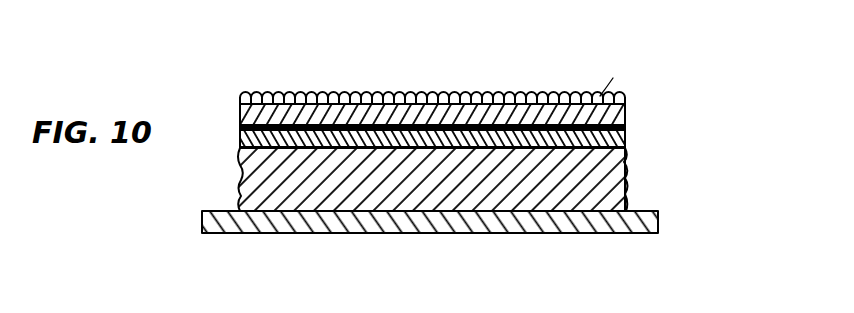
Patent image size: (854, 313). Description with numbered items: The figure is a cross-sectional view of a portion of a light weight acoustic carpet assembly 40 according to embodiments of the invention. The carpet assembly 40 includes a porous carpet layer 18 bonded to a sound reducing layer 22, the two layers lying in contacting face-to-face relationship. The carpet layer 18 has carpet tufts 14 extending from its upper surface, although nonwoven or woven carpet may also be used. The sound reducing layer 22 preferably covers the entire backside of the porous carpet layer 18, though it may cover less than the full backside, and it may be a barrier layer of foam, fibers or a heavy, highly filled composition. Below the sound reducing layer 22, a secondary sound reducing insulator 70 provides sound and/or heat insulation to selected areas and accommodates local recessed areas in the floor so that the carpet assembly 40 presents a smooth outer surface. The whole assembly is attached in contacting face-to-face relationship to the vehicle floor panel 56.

The light weight acoustic carpet assembly 40 is at (558, 61).
The carpet tufts 14 is at (497, 91).
The porous carpet layer 18 is at (626, 122).
The sound reducing layer 22 is at (241, 145).
The secondary sound reducing insulator 70 is at (630, 185).
The vehicle floor panel 56 is at (658, 222).